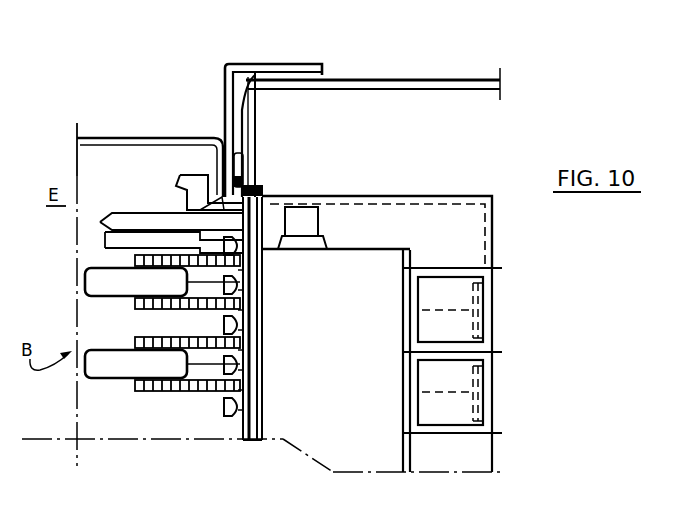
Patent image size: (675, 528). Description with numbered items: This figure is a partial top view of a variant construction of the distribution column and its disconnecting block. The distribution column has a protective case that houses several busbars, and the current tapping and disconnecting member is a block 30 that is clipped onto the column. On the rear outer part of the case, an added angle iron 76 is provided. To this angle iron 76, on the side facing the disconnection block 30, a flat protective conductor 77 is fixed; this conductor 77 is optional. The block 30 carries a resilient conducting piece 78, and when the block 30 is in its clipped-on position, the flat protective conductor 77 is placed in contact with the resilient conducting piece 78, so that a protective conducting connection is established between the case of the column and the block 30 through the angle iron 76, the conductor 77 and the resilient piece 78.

The block 30 is at (350, 335).
The angle iron 76 is at (226, 107).
The flat protective conductor 77 is at (244, 82).
The resilient conducting piece 78 is at (242, 113).